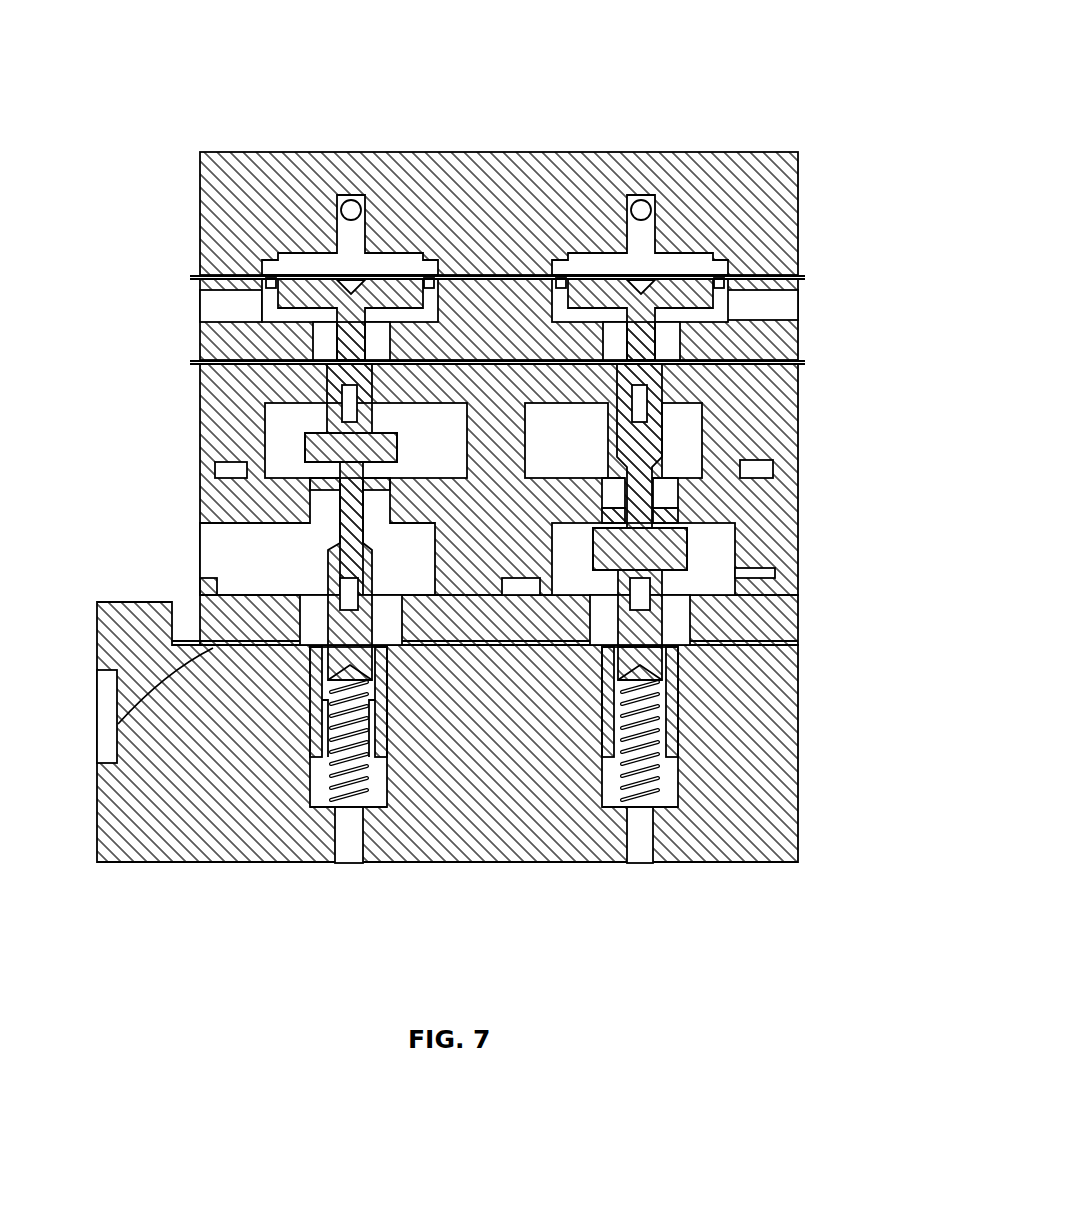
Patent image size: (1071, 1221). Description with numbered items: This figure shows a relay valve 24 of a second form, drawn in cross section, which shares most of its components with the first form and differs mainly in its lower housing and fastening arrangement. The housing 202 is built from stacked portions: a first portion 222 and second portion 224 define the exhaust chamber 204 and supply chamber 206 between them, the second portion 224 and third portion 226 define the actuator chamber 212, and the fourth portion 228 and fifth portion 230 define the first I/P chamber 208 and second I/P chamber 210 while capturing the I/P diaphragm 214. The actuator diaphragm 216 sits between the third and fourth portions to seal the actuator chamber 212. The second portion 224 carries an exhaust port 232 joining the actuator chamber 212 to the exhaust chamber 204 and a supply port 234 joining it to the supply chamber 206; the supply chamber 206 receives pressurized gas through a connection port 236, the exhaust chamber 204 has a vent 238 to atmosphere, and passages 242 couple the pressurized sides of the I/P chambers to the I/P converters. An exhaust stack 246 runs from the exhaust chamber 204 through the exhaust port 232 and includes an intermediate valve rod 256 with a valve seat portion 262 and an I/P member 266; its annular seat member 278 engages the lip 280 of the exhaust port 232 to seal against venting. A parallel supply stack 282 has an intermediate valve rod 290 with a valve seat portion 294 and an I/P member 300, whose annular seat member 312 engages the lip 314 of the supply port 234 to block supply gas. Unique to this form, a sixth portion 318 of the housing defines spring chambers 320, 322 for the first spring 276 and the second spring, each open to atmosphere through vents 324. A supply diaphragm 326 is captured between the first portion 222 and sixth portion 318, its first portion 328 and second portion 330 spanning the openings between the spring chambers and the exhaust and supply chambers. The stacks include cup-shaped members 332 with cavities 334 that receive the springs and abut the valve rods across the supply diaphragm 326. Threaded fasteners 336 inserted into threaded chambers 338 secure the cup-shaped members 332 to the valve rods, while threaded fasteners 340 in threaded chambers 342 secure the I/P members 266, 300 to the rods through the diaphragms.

The relay valve 24 is at (728, 54).
The housing 202 is at (118, 830).
The exhaust chamber 204 is at (218, 532).
The supply chamber 206 is at (673, 537).
The first I/P chamber 208 is at (275, 263).
The second I/P chamber 210 is at (700, 267).
The actuator chamber 212 is at (692, 428).
The I/P diaphragm 214 is at (800, 240).
The actuator diaphragm 216 is at (800, 388).
The first portion 222 is at (800, 608).
The second portion 224 is at (713, 550).
The third portion 226 is at (800, 448).
The fourth portion 228 is at (800, 315).
The fifth portion 230 is at (800, 188).
The exhaust port 232 is at (302, 490).
The supply port 234 is at (632, 472).
The connection/port 236 is at (773, 560).
The vent 238 is at (327, 595).
The passages or ports 242 is at (340, 210).
The exhaust stack 246 is at (320, 748).
The intermediate valve rod 256 is at (290, 437).
The valve seat portion 262 is at (305, 443).
The I/P member 266 is at (390, 287).
The first spring 276 is at (358, 808).
The annular seat member 278 is at (340, 400).
The lip 280 is at (320, 453).
The supply stack 282 is at (610, 730).
The intermediate valve rod 290 is at (650, 470).
The valve seat portion 294 is at (740, 575).
The I/P member 300 is at (592, 290).
The annular seat member 312 is at (673, 524).
The lip 314 is at (677, 515).
The sixth portion 318 is at (163, 853).
The spring chamber 320 is at (312, 790).
The spring chamber 322 is at (685, 808).
The vents 324 is at (336, 808).
The supply diaphragm 326 is at (120, 725).
The first portion 328 is at (323, 643).
The second portion 330 is at (640, 665).
The cup-shaped members 332 is at (320, 740).
The cavities 334 is at (365, 785).
The threaded fasteners 336 is at (320, 730).
The threaded chambers 338 is at (300, 617).
The threaded fasteners 340 is at (355, 310).
The threaded chambers 342 is at (330, 342).